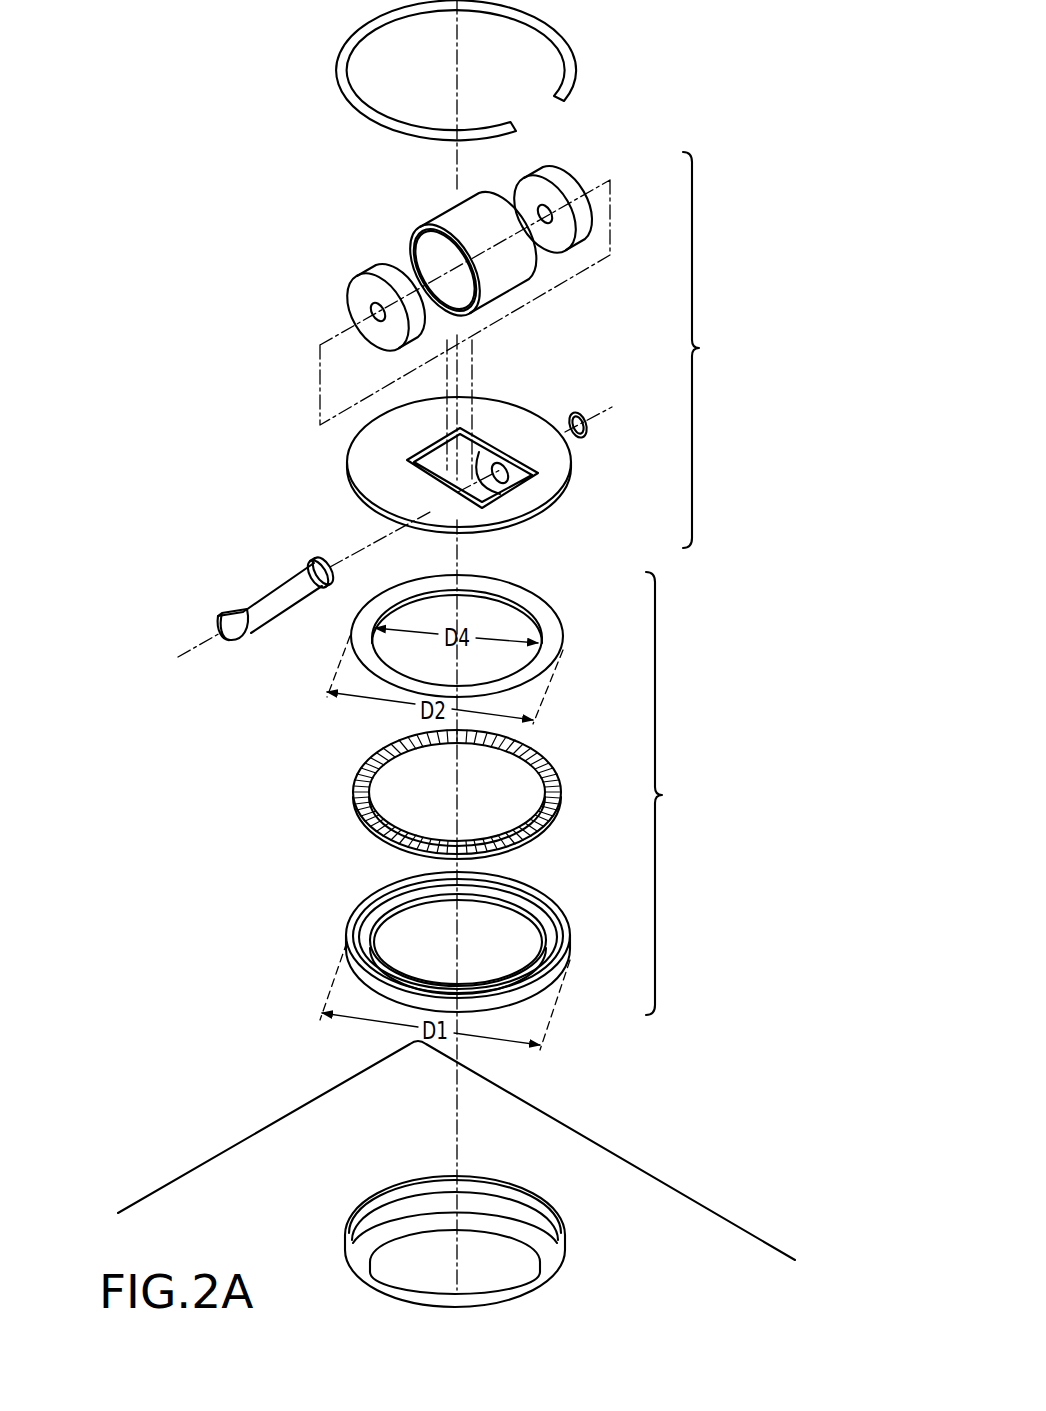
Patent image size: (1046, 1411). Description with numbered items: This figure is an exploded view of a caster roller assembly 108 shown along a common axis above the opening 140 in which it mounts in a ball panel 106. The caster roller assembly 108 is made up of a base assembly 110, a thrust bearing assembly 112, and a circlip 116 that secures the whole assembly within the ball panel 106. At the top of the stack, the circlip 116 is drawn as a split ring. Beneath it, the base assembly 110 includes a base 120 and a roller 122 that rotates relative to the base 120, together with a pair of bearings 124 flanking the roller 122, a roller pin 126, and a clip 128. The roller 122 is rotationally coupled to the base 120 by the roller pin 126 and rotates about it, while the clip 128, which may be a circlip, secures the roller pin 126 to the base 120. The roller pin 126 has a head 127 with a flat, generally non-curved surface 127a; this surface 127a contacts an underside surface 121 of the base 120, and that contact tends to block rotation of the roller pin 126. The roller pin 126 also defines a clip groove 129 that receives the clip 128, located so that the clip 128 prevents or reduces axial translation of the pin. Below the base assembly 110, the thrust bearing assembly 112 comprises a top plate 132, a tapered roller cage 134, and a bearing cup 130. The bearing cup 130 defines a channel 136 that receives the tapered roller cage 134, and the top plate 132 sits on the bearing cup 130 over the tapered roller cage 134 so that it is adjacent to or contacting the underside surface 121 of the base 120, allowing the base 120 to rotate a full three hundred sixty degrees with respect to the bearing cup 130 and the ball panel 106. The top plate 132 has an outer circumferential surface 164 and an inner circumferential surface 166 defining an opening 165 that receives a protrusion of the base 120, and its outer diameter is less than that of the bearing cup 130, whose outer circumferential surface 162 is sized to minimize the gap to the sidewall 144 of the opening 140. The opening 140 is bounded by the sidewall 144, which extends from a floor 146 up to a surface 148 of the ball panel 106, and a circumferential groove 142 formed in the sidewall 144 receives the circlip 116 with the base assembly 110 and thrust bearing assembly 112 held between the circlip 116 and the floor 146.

The ball panel 106 is at (324, 1118).
The caster roller assembly 108 is at (712, 112).
The base assembly 110 is at (713, 350).
The thrust bearing assembly 112 is at (677, 793).
The circlip 116 is at (340, 102).
The base 120 is at (392, 465).
The underside surface 121 is at (388, 520).
The roller 122 is at (432, 215).
The bearings 124 is at (560, 172).
The roller pin 126 is at (227, 624).
The head 127 is at (234, 640).
The surface 127a is at (224, 612).
The clip 128 is at (596, 426).
The clip groove 129 is at (316, 594).
The bearing cup 130 is at (443, 920).
The top plate 132 is at (497, 625).
The tapered roller cage 134 is at (348, 782).
The channel 136 is at (530, 896).
The opening 140 is at (475, 1195).
The circumferential groove 142 is at (412, 1196).
The sidewall 144 is at (468, 1194).
The floor 146 is at (542, 1258).
The surface 148 is at (274, 1226).
The outer circumferential surface 162 is at (558, 968).
The outer circumferential surface 164 is at (562, 622).
The opening 165 is at (482, 620).
The inner circumferential surface 166 is at (422, 592).